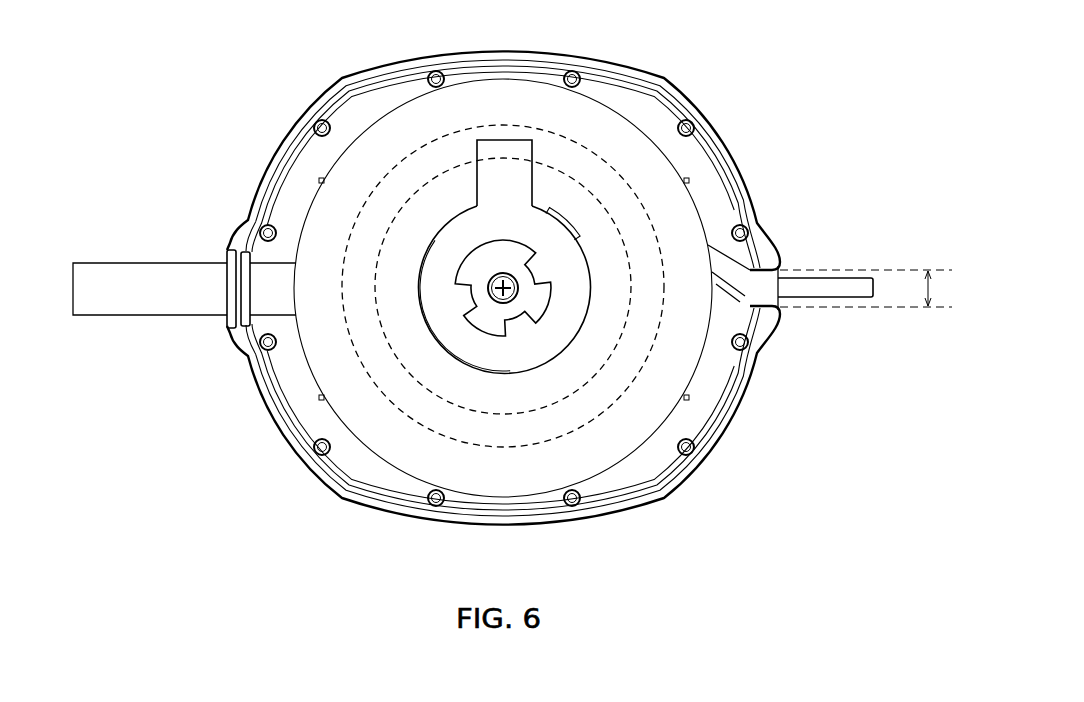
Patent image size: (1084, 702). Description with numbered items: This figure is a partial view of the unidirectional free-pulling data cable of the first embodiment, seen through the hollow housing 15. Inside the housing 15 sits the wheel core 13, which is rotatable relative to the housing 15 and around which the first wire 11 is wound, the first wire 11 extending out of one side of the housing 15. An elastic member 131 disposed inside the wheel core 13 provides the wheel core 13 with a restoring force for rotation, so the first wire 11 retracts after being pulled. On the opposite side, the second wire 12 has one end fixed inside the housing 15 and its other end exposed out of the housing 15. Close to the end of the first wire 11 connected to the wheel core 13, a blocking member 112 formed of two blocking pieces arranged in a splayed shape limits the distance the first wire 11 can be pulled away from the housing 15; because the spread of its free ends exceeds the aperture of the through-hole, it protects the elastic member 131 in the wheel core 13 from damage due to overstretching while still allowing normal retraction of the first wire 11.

The first wire 11 is at (853, 298).
The blocking member 112 is at (733, 300).
The second wire 12 is at (148, 262).
The wheel core 13 is at (380, 120).
The elastic member 131 is at (598, 148).
The housing 15 is at (277, 425).